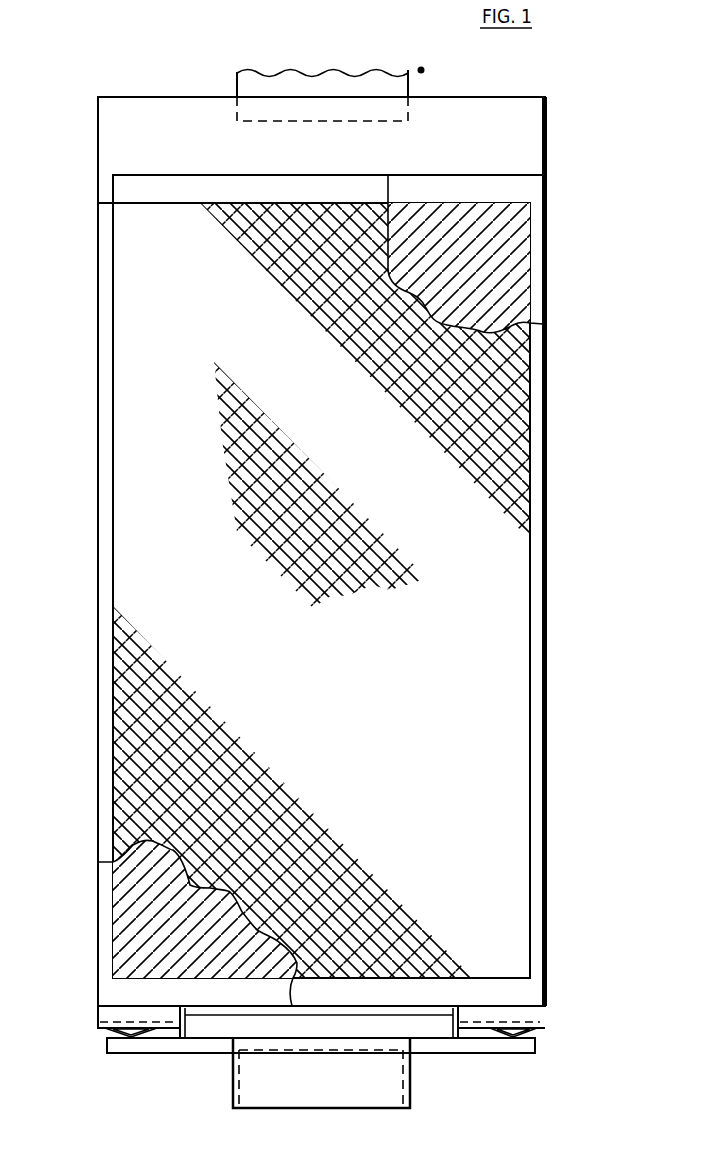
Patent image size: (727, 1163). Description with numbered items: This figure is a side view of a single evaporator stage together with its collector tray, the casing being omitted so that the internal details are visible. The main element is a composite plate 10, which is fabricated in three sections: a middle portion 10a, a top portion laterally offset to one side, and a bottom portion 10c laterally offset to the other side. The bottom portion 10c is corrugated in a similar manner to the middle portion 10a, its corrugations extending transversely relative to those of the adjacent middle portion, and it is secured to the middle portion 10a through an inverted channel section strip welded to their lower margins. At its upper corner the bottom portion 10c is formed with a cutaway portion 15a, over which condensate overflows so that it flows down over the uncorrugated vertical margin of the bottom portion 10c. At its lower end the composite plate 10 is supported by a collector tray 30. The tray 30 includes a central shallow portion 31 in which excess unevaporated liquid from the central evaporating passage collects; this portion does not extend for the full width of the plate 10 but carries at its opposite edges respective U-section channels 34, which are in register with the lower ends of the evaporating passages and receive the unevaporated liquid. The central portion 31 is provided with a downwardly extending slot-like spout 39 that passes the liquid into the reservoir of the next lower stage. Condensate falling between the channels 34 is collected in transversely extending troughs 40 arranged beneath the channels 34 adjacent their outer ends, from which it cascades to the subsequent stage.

The composite plate 10 is at (543, 241).
The middle portion 10a is at (540, 282).
The bottom portion 10c is at (320, 497).
The cutaway portion 15a is at (113, 189).
The collector tray 30 is at (323, 1038).
The central shallow portion 31 is at (438, 1030).
The U-section channel 34 is at (107, 1013).
The slot-like spout 39 is at (329, 588).
The trough 40 is at (102, 1028).